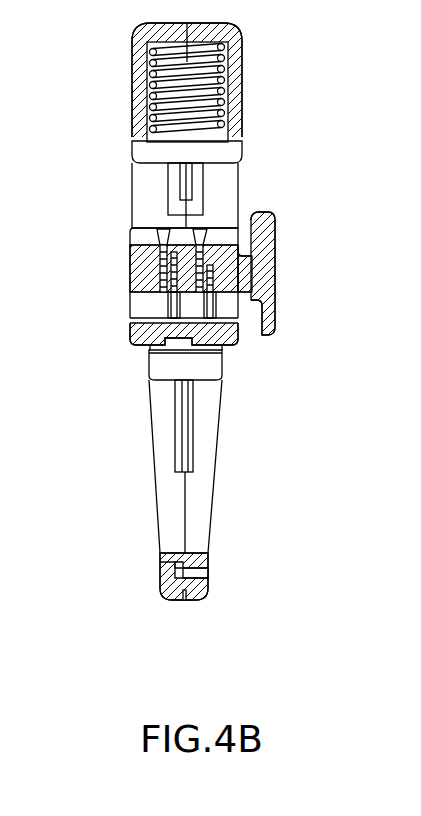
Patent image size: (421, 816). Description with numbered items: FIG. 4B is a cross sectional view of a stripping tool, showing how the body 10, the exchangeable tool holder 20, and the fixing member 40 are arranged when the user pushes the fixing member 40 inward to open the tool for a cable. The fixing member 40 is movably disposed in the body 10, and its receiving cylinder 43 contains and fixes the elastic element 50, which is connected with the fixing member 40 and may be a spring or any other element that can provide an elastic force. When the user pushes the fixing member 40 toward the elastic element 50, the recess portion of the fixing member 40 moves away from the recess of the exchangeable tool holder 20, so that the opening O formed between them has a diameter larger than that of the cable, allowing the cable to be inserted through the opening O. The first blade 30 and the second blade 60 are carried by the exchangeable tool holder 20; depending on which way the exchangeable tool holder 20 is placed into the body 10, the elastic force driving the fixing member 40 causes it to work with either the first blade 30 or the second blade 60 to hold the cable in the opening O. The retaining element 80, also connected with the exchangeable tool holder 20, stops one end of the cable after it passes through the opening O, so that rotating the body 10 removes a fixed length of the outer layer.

The body 10 is at (156, 497).
The exchangeable tool holder 20 is at (133, 238).
The first blade 30 is at (133, 283).
The fixing member 40 is at (232, 143).
The receiving cylinder 43 is at (236, 125).
The elastic element 50 is at (220, 60).
The second blade 60 is at (173, 290).
The retaining element 80 is at (270, 241).
The opening O is at (215, 195).